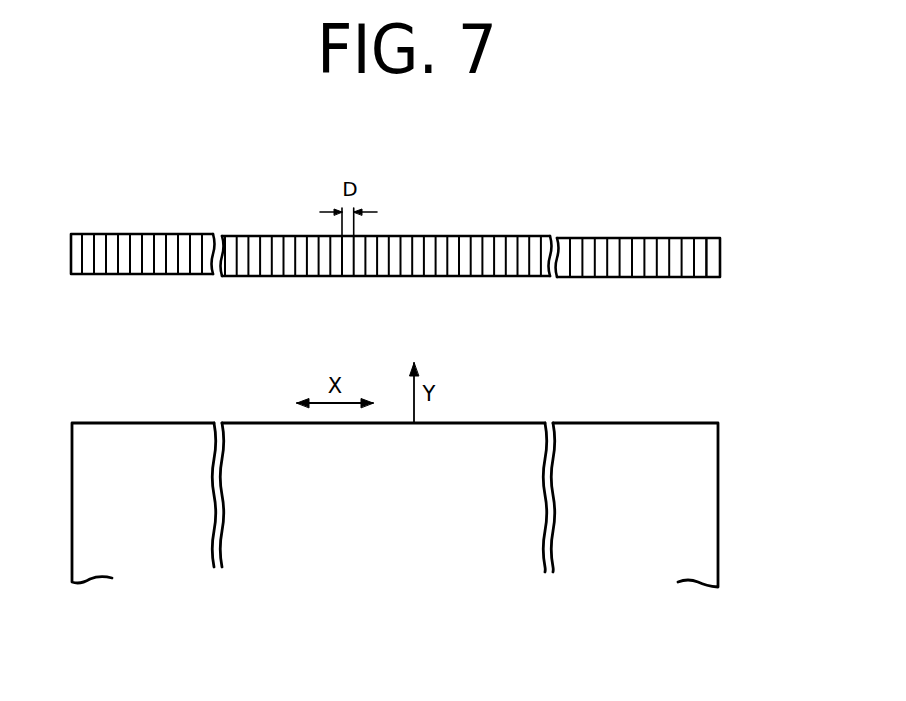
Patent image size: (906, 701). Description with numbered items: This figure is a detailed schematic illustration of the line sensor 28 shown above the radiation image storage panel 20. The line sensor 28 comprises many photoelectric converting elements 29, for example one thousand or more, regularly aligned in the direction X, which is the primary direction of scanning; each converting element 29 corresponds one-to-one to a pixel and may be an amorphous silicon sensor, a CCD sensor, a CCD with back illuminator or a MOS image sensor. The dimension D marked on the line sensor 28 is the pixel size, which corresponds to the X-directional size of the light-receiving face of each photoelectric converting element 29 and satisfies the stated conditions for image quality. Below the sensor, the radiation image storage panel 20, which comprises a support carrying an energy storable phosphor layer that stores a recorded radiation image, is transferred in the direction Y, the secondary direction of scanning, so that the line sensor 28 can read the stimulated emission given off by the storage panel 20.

The radiation image storage panel 20 is at (637, 423).
The line sensor 28 is at (581, 228).
The photoelectric converting element 29 is at (716, 238).